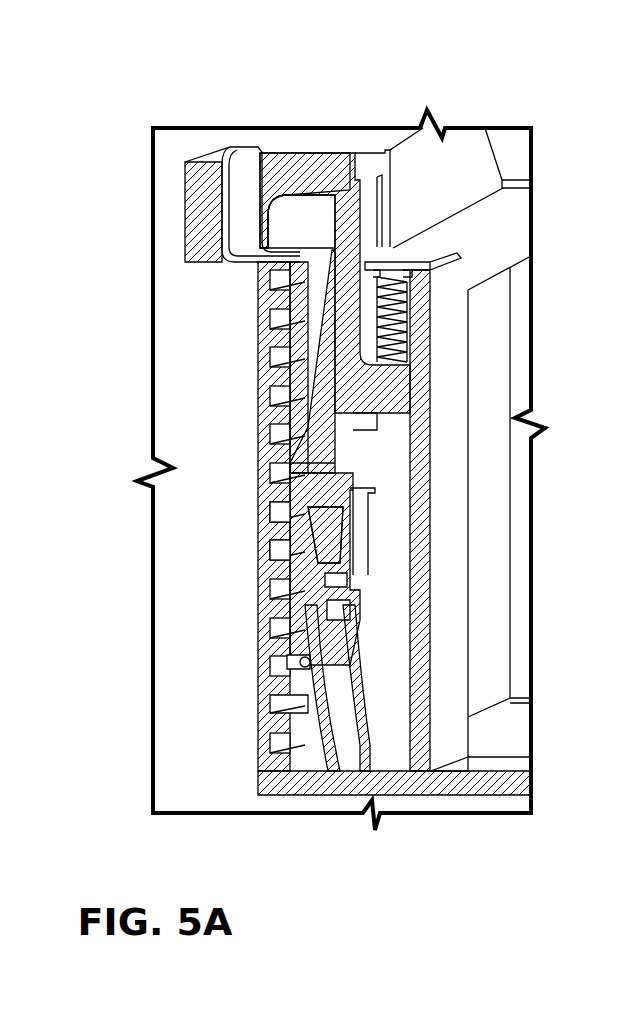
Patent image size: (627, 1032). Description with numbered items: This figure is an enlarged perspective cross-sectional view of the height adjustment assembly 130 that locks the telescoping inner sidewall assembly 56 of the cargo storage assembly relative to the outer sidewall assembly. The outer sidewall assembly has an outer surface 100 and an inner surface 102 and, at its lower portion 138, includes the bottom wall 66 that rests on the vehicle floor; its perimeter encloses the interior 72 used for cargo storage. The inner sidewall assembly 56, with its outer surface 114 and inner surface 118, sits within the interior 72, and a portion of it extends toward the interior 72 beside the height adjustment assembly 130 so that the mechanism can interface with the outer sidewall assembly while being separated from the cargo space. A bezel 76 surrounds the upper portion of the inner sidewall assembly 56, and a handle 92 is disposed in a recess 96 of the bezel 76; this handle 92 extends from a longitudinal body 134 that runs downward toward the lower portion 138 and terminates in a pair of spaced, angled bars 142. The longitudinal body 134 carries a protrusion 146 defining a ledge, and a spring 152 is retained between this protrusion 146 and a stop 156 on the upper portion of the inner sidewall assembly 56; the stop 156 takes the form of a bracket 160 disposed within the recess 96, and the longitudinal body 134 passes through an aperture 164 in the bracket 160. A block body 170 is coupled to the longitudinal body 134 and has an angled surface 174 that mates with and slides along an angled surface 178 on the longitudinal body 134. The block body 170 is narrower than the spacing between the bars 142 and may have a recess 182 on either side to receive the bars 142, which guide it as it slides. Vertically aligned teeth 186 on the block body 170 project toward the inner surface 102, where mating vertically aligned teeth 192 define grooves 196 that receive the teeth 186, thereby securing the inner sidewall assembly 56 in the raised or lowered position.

The inner sidewall assembly 56 is at (487, 307).
The bottom wall 66 is at (466, 796).
The interior 72 is at (495, 611).
The bezel 76 is at (340, 152).
The second handle 92 is at (298, 188).
The recess 96 is at (323, 236).
The outer surface 100 is at (260, 322).
The inner surface 102 is at (260, 277).
The outer surface 114 is at (360, 587).
The inner surface 118 is at (450, 418).
The height adjustment assembly 130 is at (404, 196).
The longitudinal body 134 is at (335, 427).
The lower portion 138 is at (250, 764).
The angled bars 142 is at (325, 798).
The protrusion 146 is at (430, 378).
The spring 152 is at (482, 233).
The stop 156 is at (410, 253).
The bracket 160 is at (247, 223).
The aperture 164 is at (270, 258).
The block body 170 is at (333, 542).
The angled surface 174 is at (338, 566).
The angled surface 178 is at (295, 570).
The recess 182 is at (260, 668).
The teeth 186 is at (260, 510).
The teeth 192 is at (260, 727).
The grooves 196 is at (255, 700).